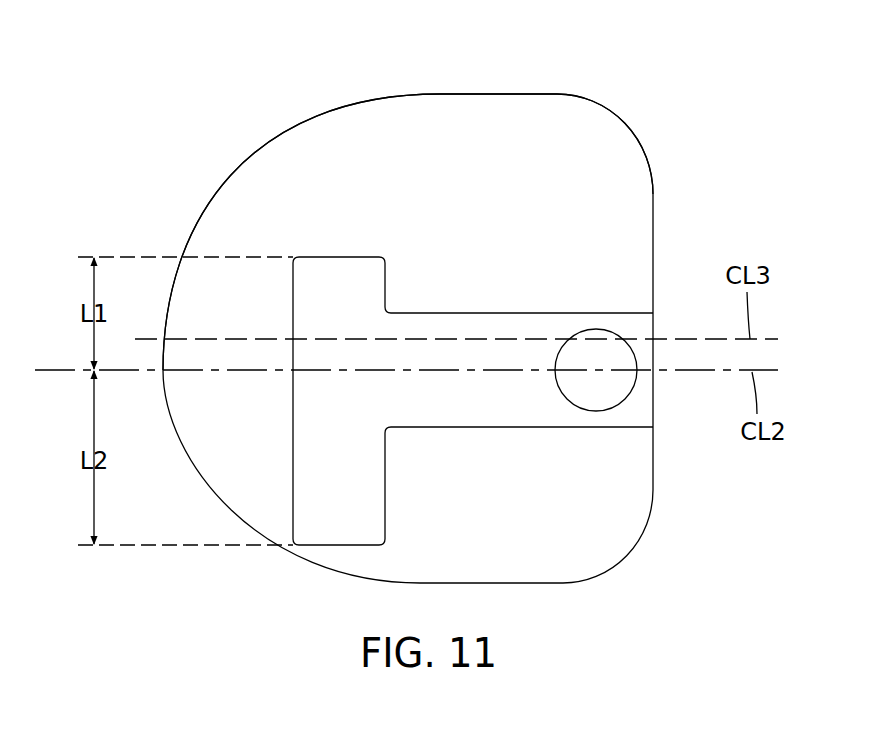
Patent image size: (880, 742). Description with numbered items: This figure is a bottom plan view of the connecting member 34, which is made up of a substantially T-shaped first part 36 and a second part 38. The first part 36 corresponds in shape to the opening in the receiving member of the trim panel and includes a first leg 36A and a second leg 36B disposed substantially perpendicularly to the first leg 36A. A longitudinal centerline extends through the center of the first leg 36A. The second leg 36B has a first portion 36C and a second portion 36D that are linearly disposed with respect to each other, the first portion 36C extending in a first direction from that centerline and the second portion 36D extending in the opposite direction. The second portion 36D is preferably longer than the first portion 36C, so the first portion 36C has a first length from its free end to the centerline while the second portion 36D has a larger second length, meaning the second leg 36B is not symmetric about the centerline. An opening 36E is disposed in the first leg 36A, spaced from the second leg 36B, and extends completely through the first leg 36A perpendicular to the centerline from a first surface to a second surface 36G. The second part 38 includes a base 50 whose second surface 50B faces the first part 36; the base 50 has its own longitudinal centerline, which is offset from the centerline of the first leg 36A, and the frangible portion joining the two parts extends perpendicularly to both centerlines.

The connecting member 34 is at (218, 180).
The second part 38 is at (296, 118).
The base 50 is at (474, 94).
The second surface 50B is at (583, 155).
The first part 36 is at (423, 412).
The first leg 36A is at (570, 313).
The second leg 36B is at (292, 413).
The first portion 36C is at (386, 289).
The second portion 36D is at (340, 548).
The opening 36E is at (576, 407).
The second surface 36G is at (461, 435).